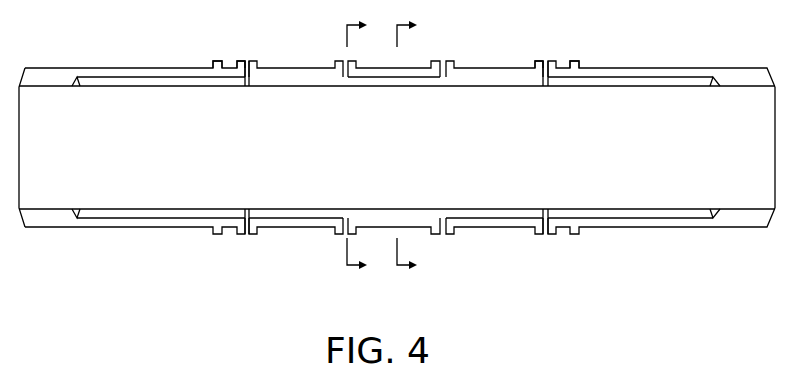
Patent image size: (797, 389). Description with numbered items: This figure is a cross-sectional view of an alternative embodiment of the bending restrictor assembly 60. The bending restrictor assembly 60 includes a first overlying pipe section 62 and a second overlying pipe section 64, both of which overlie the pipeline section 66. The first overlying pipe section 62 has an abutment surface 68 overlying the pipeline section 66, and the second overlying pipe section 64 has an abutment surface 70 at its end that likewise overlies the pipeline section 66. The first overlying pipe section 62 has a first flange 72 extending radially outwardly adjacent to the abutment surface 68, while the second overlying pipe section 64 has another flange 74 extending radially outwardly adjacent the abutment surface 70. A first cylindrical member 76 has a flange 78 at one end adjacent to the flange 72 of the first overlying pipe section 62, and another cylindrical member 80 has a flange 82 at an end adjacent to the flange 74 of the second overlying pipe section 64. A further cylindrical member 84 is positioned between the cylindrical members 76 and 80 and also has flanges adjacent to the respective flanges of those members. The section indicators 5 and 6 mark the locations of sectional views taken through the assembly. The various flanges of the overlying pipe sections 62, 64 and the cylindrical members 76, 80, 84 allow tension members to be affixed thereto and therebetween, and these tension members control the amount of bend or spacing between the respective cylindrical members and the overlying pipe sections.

The bending restrictor assembly 60 is at (688, 49).
The first overlying pipe section 62 is at (62, 73).
The second overlying pipe section 64 is at (737, 72).
The pipeline section 66 is at (645, 87).
The abutment surface 68 is at (247, 86).
The abutment surface 70 is at (546, 86).
The first flange 72 is at (247, 62).
The flange 74 is at (546, 62).
The first cylindrical member 76 is at (292, 227).
The flange 78 is at (246, 234).
The cylindrical member 80 is at (498, 228).
The flange 82 is at (544, 234).
The cylindrical member 84 is at (415, 66).
The section line 5 is at (416, 147).
The section line 6 is at (366, 147).